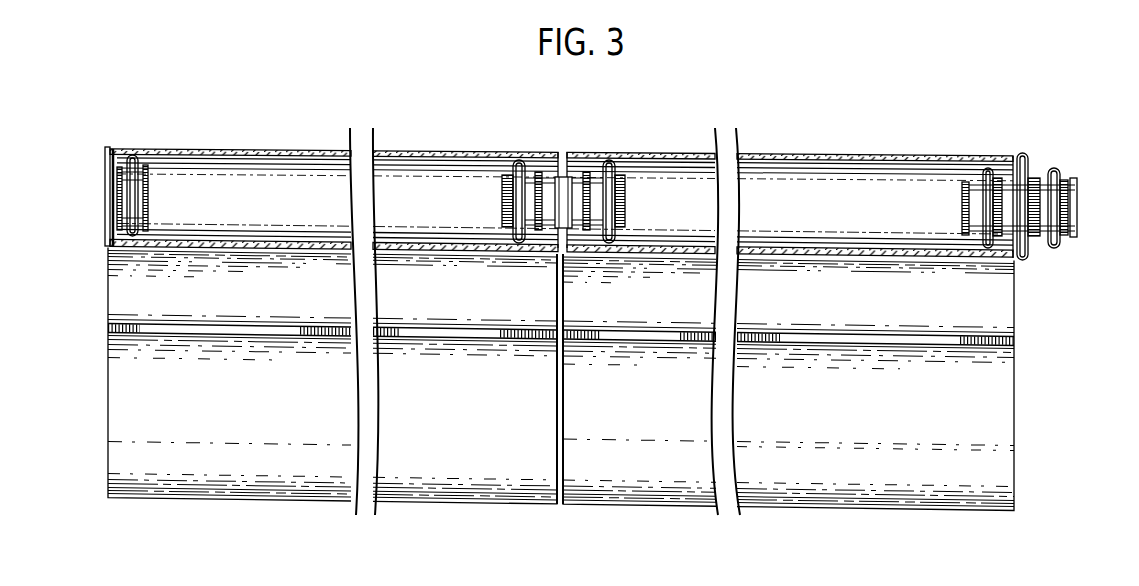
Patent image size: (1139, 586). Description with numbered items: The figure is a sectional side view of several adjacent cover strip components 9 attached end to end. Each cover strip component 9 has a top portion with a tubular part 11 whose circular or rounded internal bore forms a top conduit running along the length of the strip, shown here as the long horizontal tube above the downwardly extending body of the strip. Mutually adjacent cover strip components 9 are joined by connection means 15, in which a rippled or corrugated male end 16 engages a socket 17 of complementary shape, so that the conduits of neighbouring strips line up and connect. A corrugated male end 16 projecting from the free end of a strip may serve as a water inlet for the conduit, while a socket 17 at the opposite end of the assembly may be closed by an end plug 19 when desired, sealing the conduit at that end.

The cover strip component 9 is at (285, 139).
The tubular part 11 is at (565, 201).
The connection means 15 is at (524, 137).
The male end 16 is at (609, 162).
The socket 17 is at (133, 156).
The end plug 19 is at (105, 177).